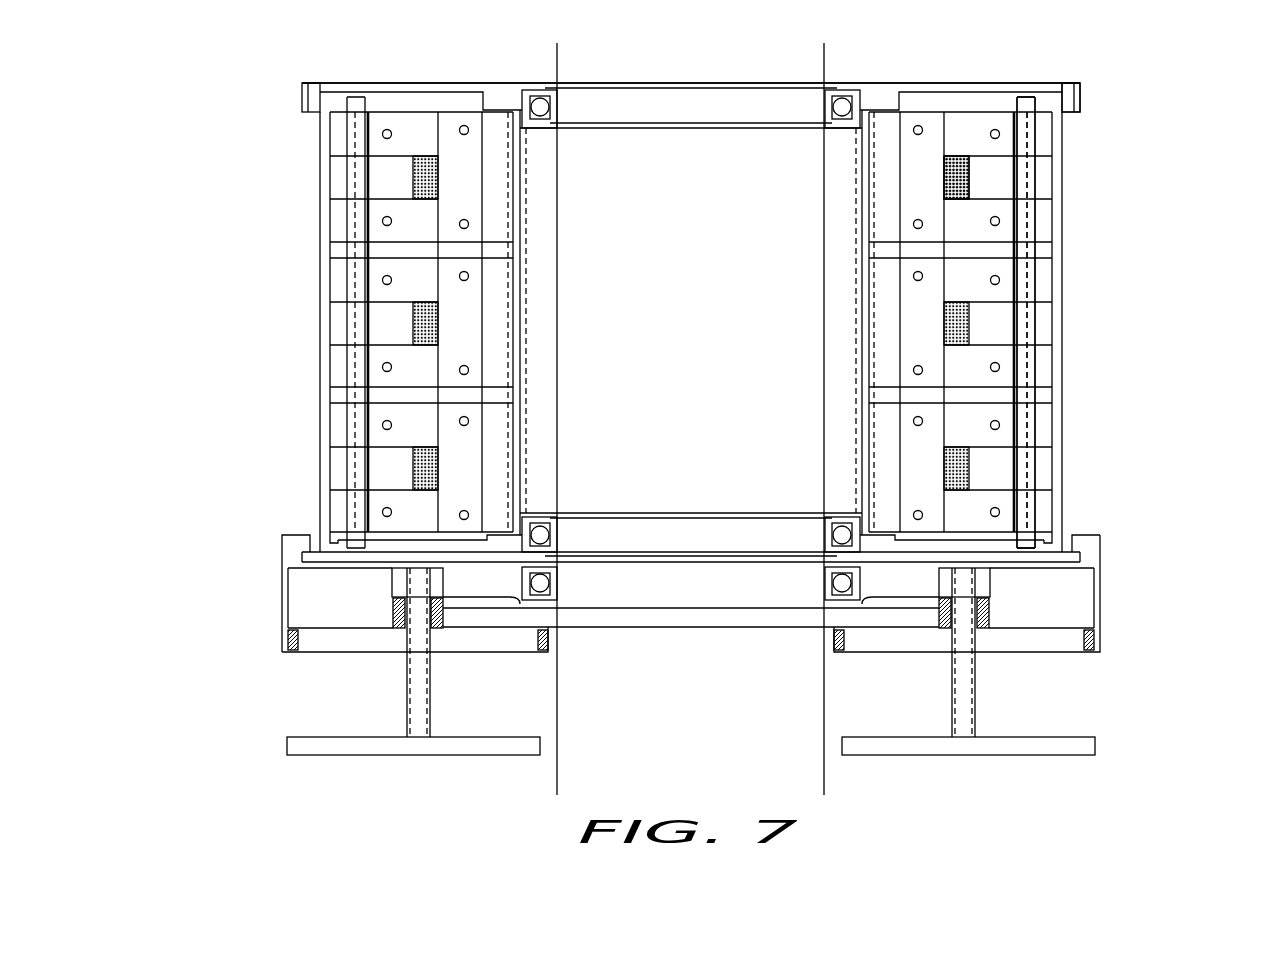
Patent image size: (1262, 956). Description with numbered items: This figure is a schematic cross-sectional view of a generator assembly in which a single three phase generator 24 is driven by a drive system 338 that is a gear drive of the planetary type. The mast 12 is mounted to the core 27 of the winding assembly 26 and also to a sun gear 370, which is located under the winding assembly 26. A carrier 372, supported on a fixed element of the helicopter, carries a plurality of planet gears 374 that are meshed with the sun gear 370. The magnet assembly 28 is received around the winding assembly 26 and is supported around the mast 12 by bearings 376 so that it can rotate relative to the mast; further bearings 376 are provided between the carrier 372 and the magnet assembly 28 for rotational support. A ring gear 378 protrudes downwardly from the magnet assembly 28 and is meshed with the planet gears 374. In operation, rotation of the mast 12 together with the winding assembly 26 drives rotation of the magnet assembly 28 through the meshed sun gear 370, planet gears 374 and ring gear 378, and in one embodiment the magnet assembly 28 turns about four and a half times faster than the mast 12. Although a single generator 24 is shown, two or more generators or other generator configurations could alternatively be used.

The mast 12 is at (778, 755).
The three phase generator 24 is at (1093, 92).
The winding assembly 26 is at (967, 158).
The core 27 is at (540, 167).
The magnet assembly 28 is at (1033, 222).
The drive system 338 is at (1103, 597).
The sun gear 370 is at (683, 617).
The carrier 372 is at (409, 747).
The planet gears 374 is at (1053, 640).
The bearings 376 is at (545, 587).
The ring gear 378 is at (282, 592).